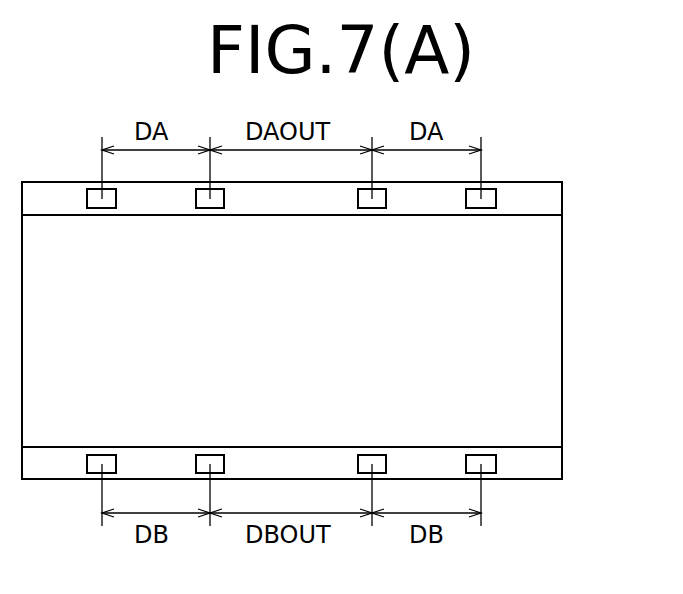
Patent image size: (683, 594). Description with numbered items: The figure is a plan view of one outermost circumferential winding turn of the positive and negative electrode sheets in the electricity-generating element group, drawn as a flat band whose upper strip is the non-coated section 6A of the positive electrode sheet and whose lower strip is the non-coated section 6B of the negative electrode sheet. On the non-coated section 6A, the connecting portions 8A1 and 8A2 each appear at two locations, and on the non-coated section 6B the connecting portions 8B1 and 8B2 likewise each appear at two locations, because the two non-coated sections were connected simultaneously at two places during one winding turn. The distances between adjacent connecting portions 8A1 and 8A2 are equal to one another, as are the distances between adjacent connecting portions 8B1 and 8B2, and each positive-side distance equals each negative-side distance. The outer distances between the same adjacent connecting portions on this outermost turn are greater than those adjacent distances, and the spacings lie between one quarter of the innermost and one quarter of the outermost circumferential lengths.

The non-coated section of positive electrode sheet 6A is at (563, 197).
The non-coated section of negative electrode sheet 6B is at (563, 460).
The connecting portion 8A1 is at (101, 209).
The connecting portion 8A2 is at (210, 209).
The connecting portion 8B1 is at (102, 455).
The connecting portion 8B2 is at (211, 455).